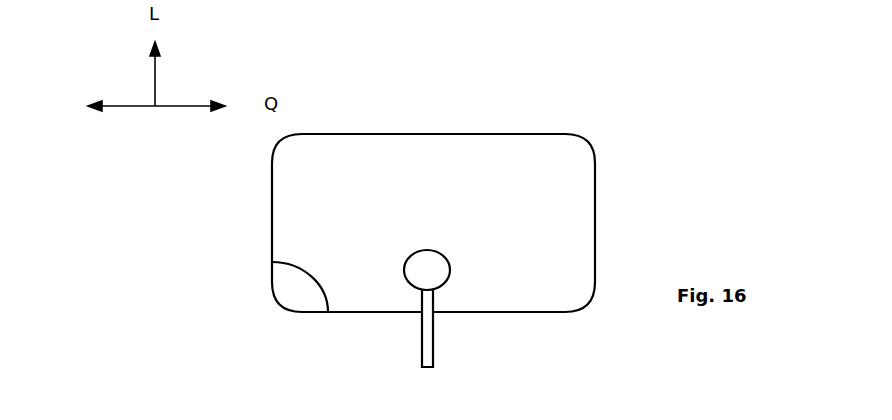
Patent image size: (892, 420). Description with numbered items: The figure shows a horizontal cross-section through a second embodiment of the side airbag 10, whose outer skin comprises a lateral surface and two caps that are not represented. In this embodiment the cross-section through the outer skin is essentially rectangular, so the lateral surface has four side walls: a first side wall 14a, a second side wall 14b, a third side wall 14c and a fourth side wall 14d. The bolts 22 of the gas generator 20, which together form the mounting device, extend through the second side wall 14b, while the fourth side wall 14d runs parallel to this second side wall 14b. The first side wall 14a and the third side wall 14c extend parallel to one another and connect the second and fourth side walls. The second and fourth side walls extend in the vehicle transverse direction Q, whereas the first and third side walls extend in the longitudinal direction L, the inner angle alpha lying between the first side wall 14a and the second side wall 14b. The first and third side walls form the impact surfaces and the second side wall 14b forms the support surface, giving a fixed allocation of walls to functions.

The side airbag 10 is at (229, 243).
The first side wall 14a is at (272, 202).
The second side wall 14b is at (358, 312).
The third side wall 14c is at (595, 200).
The fourth side wall 14d is at (405, 135).
The gas generator 20 is at (430, 272).
The bolts 22 is at (427, 340).
The inner angle alpha is at (293, 288).